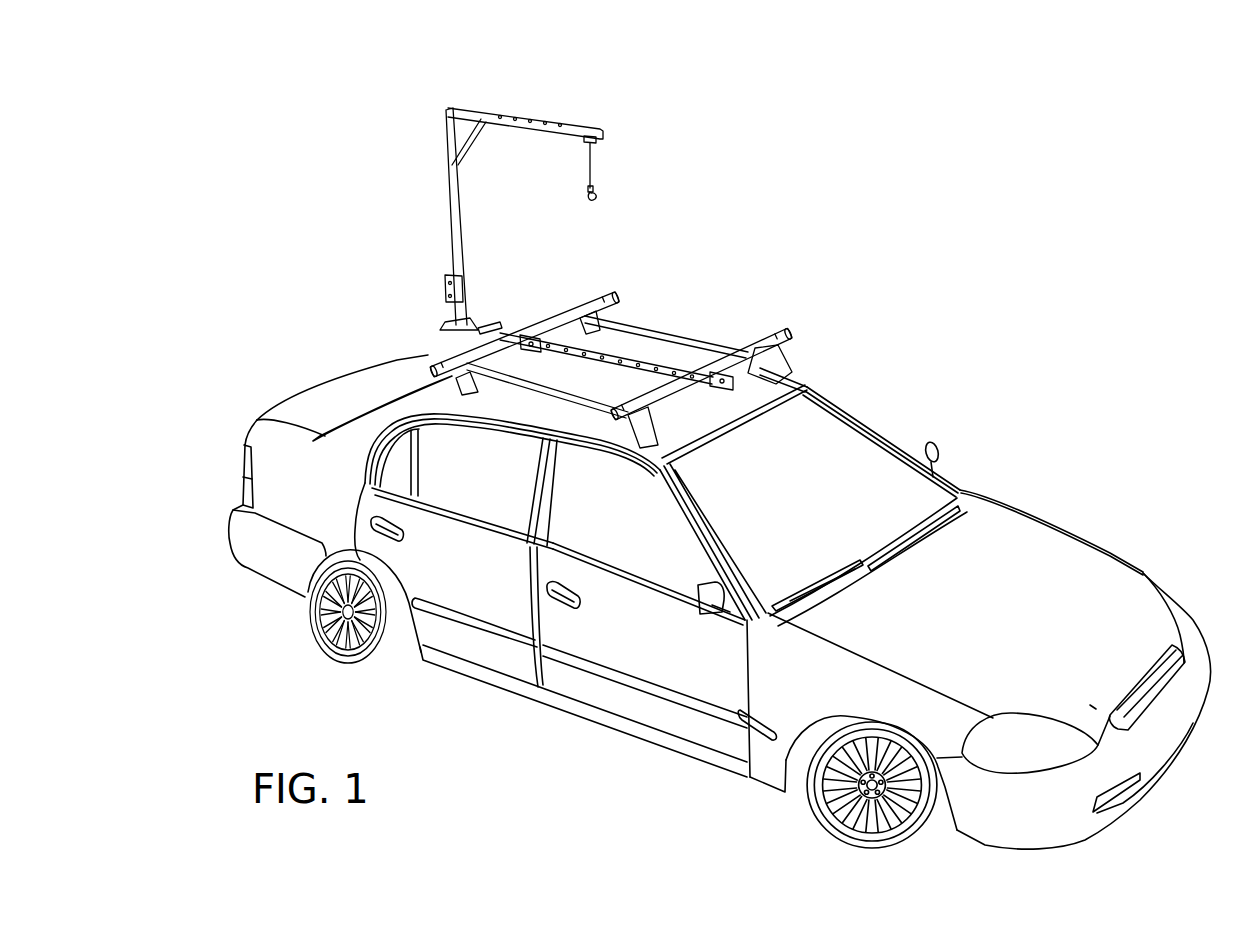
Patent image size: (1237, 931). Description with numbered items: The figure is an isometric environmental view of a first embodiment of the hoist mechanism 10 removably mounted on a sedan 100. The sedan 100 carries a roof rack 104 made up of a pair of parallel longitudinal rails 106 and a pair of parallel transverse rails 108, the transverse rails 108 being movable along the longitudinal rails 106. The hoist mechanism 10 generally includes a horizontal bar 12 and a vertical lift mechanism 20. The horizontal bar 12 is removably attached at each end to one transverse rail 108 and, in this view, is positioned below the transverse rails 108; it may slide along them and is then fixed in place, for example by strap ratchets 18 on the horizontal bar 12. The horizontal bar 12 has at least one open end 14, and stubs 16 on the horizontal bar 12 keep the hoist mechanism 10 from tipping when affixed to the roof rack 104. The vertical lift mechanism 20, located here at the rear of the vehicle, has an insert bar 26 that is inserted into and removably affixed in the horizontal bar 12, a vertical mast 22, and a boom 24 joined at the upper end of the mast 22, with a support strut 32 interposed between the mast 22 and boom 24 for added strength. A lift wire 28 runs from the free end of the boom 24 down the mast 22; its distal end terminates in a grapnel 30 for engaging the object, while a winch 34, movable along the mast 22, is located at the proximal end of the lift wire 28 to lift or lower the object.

The hoist mechanism 10 is at (722, 238).
The horizontal bar 12 is at (658, 360).
The open end 14 is at (507, 330).
The stubs 16 is at (540, 327).
The strap ratchets 18 is at (565, 300).
The vertical lift mechanism 20 is at (536, 92).
The vertical mast 22 is at (462, 210).
The boom 24 is at (590, 127).
The insert bar 26 is at (489, 325).
The lift wire 28 is at (590, 157).
The grapnel 30 is at (592, 192).
The support strut 32 is at (477, 146).
The winch 34 is at (445, 288).
The sedan 100 is at (1008, 626).
The roof rack 104 is at (805, 330).
The longitudinal rails 106 is at (450, 386).
The transverse rails 108 is at (440, 365).